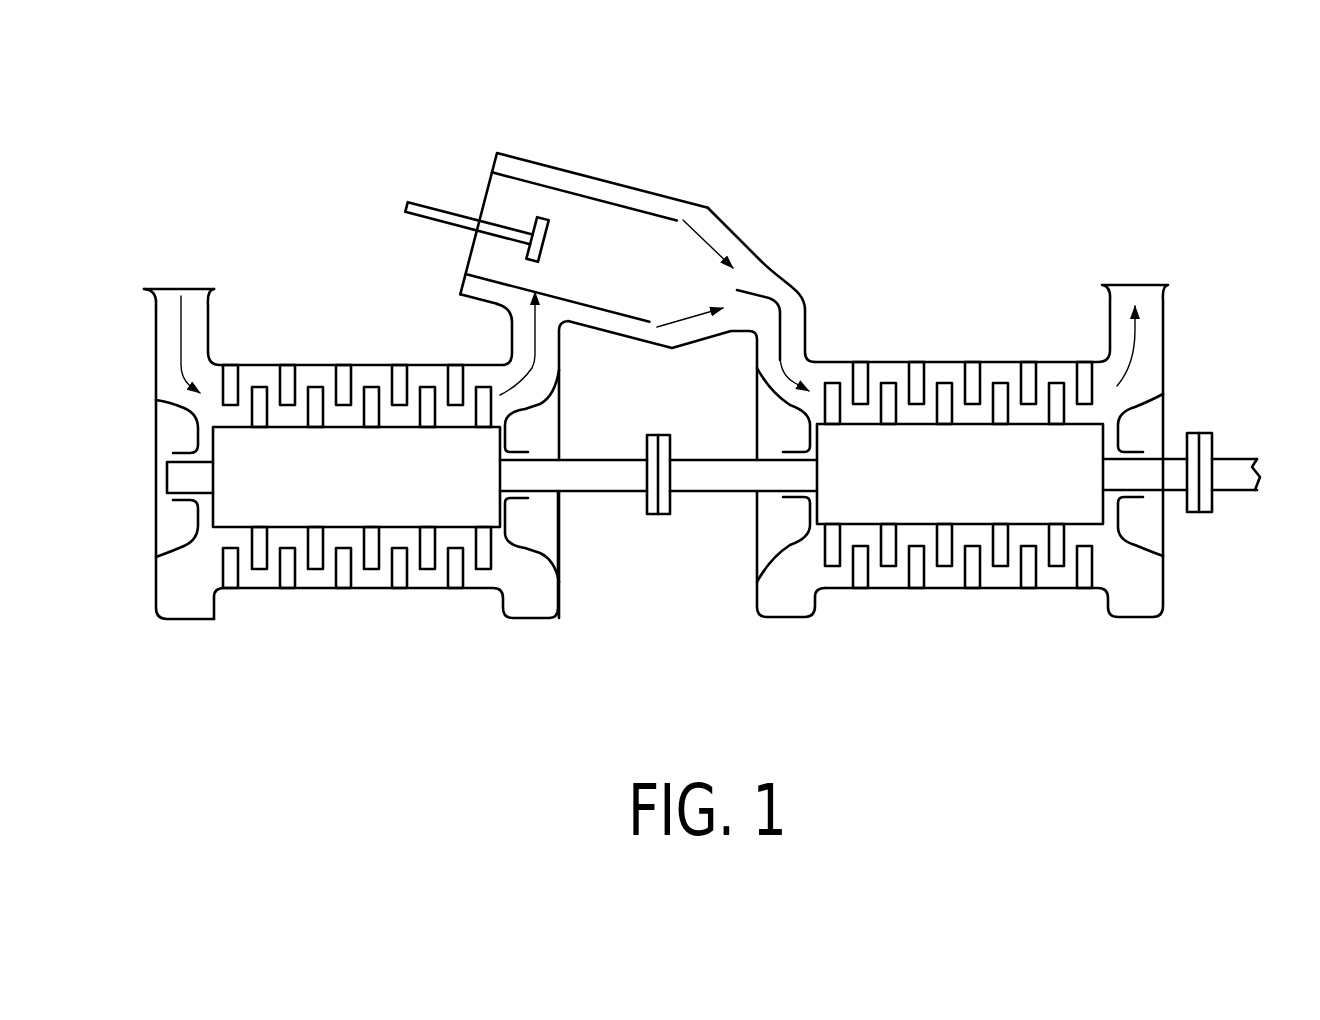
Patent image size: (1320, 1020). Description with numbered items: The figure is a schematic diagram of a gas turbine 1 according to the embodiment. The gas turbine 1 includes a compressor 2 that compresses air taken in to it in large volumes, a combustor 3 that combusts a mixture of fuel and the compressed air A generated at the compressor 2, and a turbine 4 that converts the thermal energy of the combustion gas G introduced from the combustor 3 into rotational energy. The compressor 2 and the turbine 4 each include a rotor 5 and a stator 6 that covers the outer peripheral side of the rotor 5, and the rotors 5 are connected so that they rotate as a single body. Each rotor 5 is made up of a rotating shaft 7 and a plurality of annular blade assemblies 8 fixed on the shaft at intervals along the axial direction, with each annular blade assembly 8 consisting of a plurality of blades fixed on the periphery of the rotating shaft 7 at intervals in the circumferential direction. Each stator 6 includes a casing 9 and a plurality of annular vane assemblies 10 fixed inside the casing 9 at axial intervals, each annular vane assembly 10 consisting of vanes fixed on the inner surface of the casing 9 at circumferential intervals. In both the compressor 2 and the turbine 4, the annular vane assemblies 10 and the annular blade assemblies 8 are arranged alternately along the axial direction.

The gas turbine 1 is at (888, 98).
The compressor 2 is at (368, 595).
The combustor 3 is at (665, 191).
The turbine 4 is at (1032, 591).
The rotor 5 is at (216, 541).
The stator 6 is at (514, 598).
The rotating shaft 7 is at (337, 518).
The annular blade assemblies 8 is at (888, 390).
The casing 9 is at (955, 594).
The annular vane assemblies 10 is at (861, 370).
The compressed air A is at (533, 340).
The combustion gas G is at (768, 296).